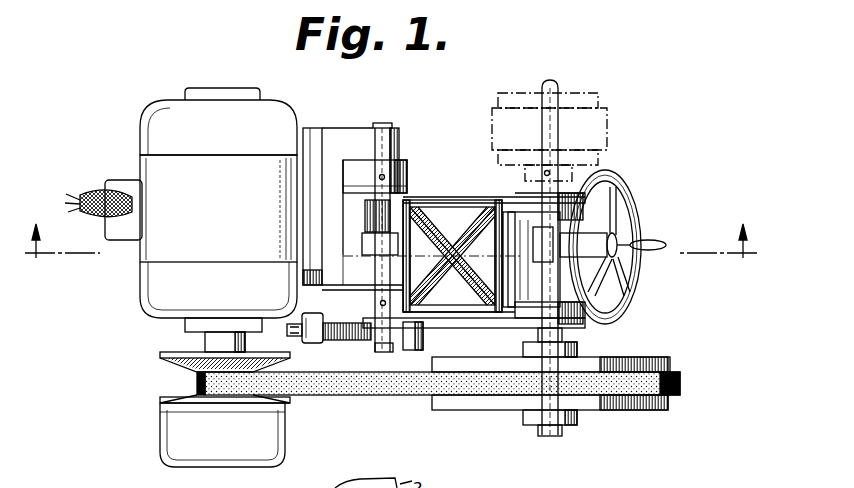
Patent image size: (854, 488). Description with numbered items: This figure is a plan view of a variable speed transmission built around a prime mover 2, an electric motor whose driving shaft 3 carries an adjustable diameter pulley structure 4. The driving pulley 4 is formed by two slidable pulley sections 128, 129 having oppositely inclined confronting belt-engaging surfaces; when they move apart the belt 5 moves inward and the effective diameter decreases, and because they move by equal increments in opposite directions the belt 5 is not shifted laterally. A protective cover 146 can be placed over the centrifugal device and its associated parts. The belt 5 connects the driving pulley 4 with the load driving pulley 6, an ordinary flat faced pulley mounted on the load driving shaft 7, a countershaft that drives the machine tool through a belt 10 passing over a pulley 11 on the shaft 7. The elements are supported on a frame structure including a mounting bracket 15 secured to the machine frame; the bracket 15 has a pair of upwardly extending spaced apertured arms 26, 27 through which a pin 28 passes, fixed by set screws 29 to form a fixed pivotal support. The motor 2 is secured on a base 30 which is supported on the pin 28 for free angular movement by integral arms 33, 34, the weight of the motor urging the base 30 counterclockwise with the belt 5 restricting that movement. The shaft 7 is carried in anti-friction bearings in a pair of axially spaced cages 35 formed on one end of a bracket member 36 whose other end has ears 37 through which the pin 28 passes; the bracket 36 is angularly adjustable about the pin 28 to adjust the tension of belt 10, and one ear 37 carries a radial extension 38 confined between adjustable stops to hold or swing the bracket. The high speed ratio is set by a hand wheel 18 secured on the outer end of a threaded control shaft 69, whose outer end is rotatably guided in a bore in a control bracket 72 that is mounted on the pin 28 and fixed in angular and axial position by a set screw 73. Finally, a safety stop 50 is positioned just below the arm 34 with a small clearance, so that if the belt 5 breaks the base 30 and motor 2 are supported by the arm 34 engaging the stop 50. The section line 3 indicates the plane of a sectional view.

The prime mover 2 is at (158, 118).
The driving shaft 3 is at (391, 255).
The adjustable diameter pulley structure 4 is at (405, 400).
The belt 5 is at (360, 388).
The load driving pulley 6 is at (672, 357).
The load driving shaft 7 is at (549, 80).
The belt 10 is at (607, 118).
The pulley 11 is at (598, 93).
The mounting bracket 15 is at (407, 165).
The hand wheel 18 is at (628, 247).
The upwardly extending arm 26 is at (428, 309).
The upwardly extending arm 27 is at (407, 180).
The pin 28 is at (388, 123).
The set screws 29 is at (384, 172).
The base 30 is at (310, 128).
The arm 33 is at (352, 128).
The arm 34 is at (355, 272).
The cages 35 is at (580, 204).
The bracket member 36 is at (482, 197).
The ears 37 is at (365, 212).
The radial extension 38 is at (345, 338).
The safety stop 50 is at (300, 330).
The threaded control shaft 69 is at (616, 243).
The control bracket 72 is at (431, 244).
The set screw 73 is at (362, 244).
The pulley section 128 is at (185, 360).
The pulley section 129 is at (175, 394).
The protective cover 146 is at (165, 437).